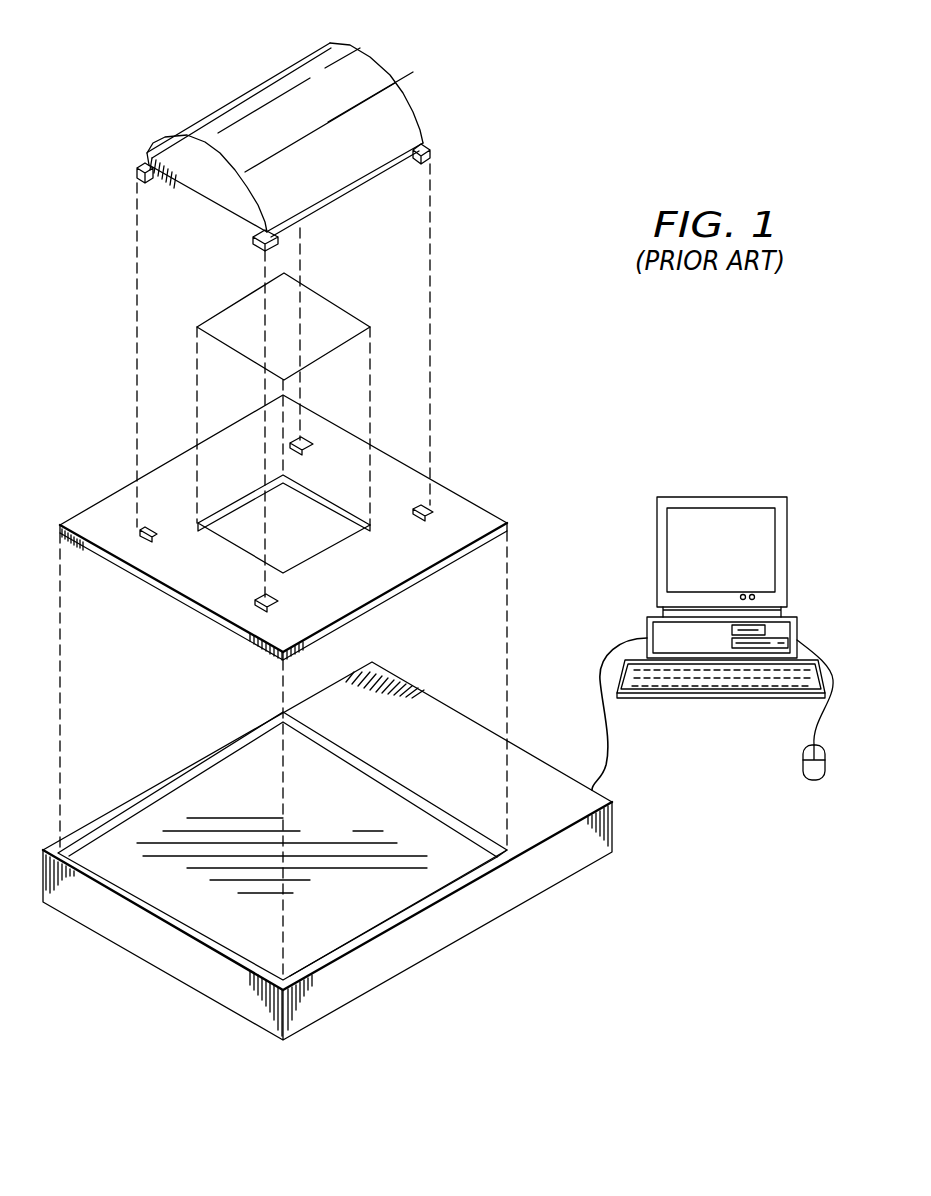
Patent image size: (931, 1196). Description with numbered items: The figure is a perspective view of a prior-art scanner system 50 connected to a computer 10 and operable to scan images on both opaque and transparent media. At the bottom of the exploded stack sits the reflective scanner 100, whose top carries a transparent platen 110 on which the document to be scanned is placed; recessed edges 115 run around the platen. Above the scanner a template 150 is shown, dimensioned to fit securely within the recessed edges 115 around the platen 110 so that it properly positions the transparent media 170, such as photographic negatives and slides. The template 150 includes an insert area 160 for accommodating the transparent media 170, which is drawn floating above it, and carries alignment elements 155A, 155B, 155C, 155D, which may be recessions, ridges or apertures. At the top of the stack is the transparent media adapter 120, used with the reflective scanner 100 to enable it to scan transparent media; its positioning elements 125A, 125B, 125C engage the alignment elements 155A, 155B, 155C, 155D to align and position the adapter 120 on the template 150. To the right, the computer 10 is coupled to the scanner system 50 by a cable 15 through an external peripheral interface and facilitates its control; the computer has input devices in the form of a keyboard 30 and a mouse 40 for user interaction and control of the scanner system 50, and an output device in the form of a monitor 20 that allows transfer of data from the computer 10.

The computer 10 is at (798, 628).
The cable 15 is at (603, 657).
The monitor 20 is at (722, 497).
The keyboard 30 is at (720, 698).
The mouse 40 is at (803, 762).
The scanner system 50 is at (562, 343).
The reflective scanner 100 is at (448, 945).
The transparent platen 110 is at (428, 823).
The recessed edges 115 is at (225, 760).
The transparent media adapter 120 is at (358, 50).
The positioning element 125A is at (137, 172).
The positioning element 125B is at (253, 246).
The positioning element 125C is at (430, 148).
The template 150 is at (398, 590).
The alignment element 155A is at (155, 528).
The alignment element 155B is at (278, 600).
The alignment element 155C is at (433, 518).
The alignment element 155D is at (307, 440).
The insert area 160 is at (317, 510).
The transparent media 170 is at (328, 298).